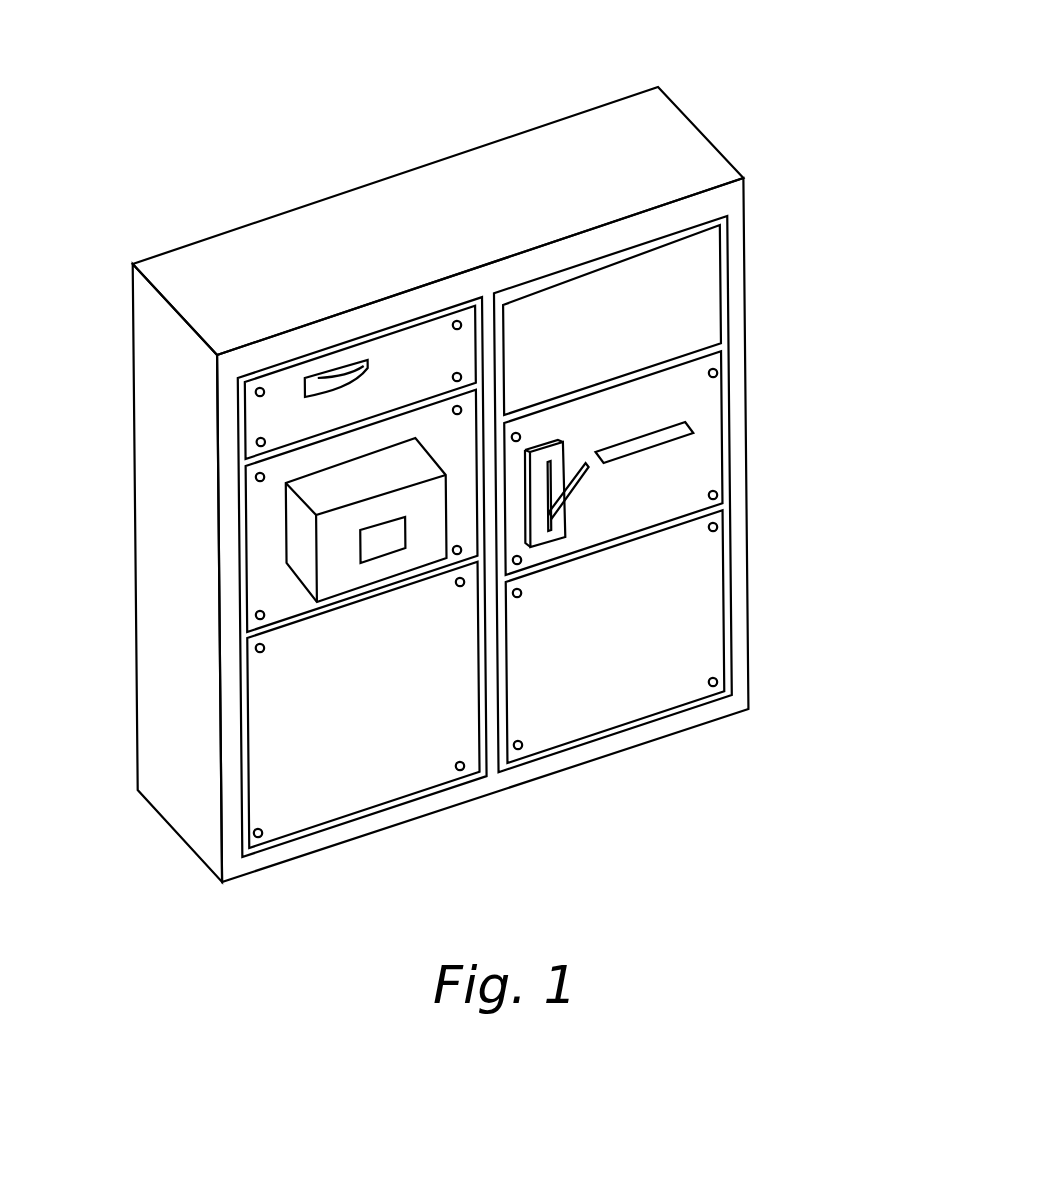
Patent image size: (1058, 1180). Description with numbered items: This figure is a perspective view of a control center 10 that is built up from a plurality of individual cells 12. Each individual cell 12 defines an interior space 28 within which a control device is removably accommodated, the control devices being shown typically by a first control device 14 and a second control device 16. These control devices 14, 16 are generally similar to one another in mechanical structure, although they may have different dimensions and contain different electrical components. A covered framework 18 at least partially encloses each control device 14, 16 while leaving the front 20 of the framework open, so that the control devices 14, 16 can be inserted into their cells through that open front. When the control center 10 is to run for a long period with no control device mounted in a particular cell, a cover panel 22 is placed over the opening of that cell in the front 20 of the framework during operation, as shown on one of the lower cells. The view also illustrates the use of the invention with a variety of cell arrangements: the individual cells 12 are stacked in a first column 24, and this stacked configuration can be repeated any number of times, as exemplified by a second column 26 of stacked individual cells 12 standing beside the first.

The control center 10 is at (660, 37).
The individual cell 12 is at (712, 270).
The control device 14 is at (417, 350).
The control device 16 is at (330, 550).
The covered framework 18 is at (228, 287).
The front of the framework 20 is at (217, 728).
The cover panel 22 is at (328, 798).
The first column 24 is at (407, 772).
The second column 26 is at (636, 710).
The interior space 28 is at (653, 332).